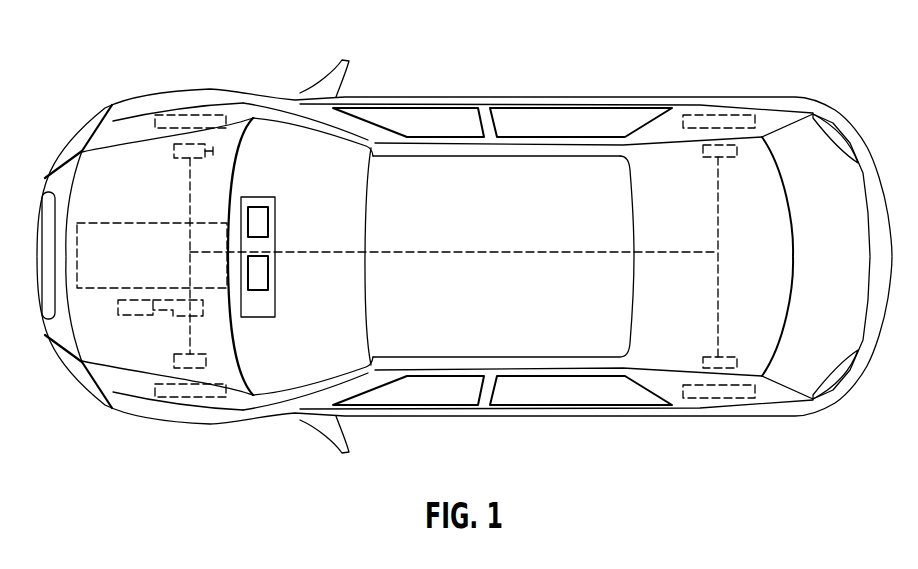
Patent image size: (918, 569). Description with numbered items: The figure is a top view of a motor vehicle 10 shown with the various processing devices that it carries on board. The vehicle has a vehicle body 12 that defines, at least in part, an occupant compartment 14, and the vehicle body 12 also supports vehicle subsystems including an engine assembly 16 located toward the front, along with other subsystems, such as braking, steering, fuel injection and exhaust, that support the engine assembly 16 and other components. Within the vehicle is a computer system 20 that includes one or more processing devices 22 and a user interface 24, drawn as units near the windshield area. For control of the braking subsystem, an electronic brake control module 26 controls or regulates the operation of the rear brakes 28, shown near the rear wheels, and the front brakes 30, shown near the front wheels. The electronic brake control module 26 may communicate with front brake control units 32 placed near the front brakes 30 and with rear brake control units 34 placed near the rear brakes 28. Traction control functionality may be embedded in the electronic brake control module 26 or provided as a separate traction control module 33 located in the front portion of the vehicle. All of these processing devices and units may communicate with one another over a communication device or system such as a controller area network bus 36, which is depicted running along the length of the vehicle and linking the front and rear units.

The motor vehicle 10 is at (102, 36).
The vehicle body 12 is at (479, 90).
The occupant compartment 14 is at (512, 332).
The engine assembly 16 is at (132, 222).
The computer system 20 is at (269, 142).
The processing device 22 is at (260, 224).
The user interface 24 is at (262, 268).
The electronic brake control module 26 is at (267, 413).
The rear brakes 28 is at (725, 117).
The front brakes 30 is at (190, 115).
The front brake control units 32 is at (215, 151).
The traction control module 33 is at (140, 316).
The rear brake control units 34 is at (725, 353).
The controller area network bus 36 is at (470, 250).